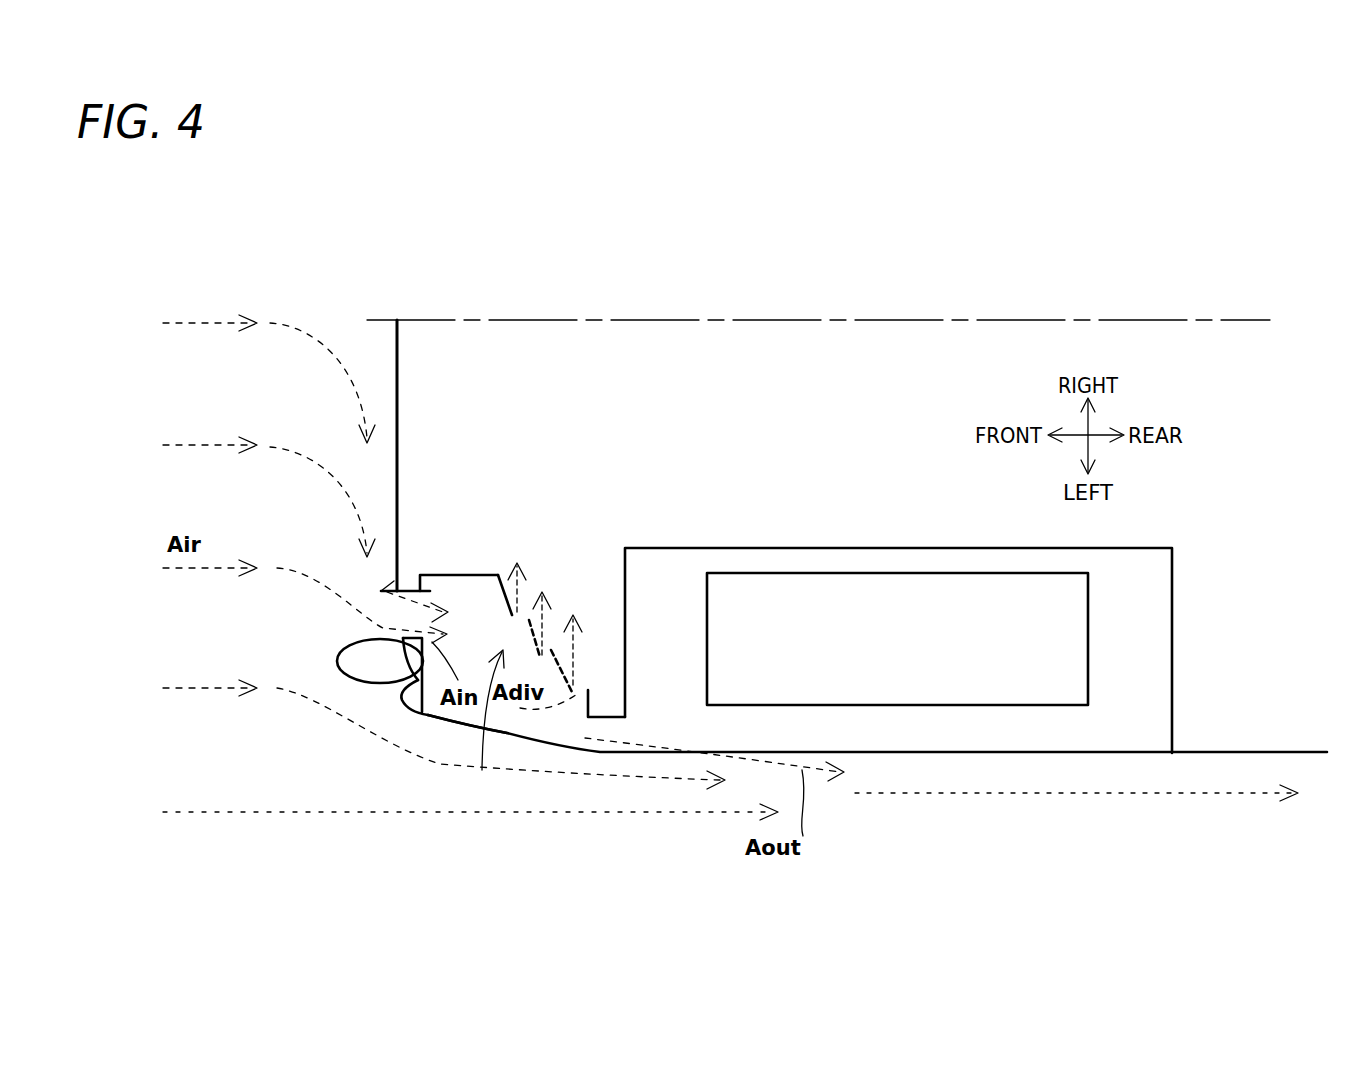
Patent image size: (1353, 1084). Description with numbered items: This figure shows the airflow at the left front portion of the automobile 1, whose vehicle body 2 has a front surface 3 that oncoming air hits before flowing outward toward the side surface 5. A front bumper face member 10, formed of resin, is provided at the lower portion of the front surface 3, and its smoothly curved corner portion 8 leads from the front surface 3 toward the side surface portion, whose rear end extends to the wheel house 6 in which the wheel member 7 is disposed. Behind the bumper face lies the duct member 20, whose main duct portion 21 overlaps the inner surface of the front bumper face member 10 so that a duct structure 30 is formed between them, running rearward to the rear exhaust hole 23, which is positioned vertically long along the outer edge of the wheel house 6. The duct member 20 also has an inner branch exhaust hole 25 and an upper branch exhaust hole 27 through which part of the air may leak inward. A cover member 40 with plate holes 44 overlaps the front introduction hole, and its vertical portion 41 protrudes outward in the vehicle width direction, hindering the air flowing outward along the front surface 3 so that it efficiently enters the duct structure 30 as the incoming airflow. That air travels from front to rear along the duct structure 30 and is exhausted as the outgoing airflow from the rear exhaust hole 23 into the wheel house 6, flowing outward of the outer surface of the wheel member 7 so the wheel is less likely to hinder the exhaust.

The automobile 1 is at (897, 285).
The vehicle body 2 is at (705, 334).
The front surface 3 is at (392, 352).
The side surface 5 is at (877, 809).
The wheel house 6 is at (880, 601).
The wheel member 7 is at (954, 598).
The corner portion 8 is at (430, 717).
The front bumper face member 10 is at (555, 745).
The duct member 20 is at (466, 502).
The main duct portion 21 is at (432, 575).
The rear exhaust hole 23 is at (620, 732).
The inner branch exhaust hole 25 is at (600, 574).
The upper branch exhaust hole 27 is at (530, 615).
The duct structure 30 is at (444, 750).
The cover member 40 is at (360, 668).
The vertical portion 41 is at (307, 701).
The plate holes 44 is at (325, 627).